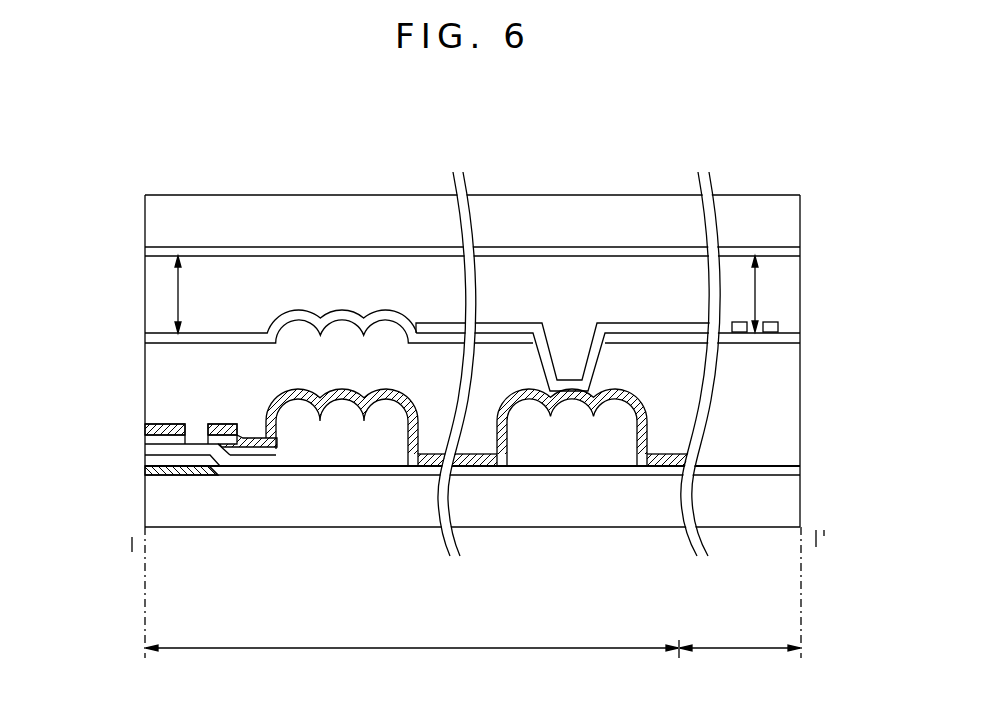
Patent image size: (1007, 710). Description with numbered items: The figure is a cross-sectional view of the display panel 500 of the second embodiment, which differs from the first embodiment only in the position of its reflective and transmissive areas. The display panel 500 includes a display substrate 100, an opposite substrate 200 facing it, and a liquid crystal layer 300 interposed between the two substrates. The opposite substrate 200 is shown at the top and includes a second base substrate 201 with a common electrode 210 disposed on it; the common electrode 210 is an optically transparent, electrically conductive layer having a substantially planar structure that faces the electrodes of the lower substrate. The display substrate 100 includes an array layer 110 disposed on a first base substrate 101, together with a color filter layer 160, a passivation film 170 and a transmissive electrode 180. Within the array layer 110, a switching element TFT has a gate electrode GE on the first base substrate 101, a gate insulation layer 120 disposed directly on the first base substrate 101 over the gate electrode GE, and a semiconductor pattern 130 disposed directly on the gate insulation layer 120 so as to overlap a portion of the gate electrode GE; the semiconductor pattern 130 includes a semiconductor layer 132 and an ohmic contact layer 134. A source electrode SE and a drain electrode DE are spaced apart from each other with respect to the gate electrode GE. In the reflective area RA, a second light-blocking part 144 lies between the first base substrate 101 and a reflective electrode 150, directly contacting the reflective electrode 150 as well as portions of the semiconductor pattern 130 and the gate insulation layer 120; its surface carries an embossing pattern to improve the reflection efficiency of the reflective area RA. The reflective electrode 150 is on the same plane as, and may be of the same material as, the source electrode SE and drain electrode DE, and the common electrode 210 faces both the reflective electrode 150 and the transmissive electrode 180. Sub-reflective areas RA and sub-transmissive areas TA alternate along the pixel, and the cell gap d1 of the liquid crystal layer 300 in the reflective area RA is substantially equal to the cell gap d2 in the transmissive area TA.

The display panel 500 is at (262, 150).
The opposite substrate 200 is at (128, 197).
The second base substrate 201 is at (204, 208).
The common electrode 210 is at (668, 247).
The liquid crystal layer 300 is at (128, 258).
The display substrate 100 is at (80, 338).
The array layer 110 is at (128, 440).
The first base substrate 101 is at (501, 530).
The gate insulation layer 120 is at (800, 466).
The semiconductor pattern 130 is at (330, 580).
The semiconductor layer 132 is at (262, 458).
The ohmic contact layer 134 is at (278, 460).
The second light-blocking part 144 is at (368, 437).
The reflective electrode 150 is at (415, 440).
The color filter layer 160 is at (667, 445).
The passivation film 170 is at (800, 343).
The transmissive electrode 180 is at (618, 323).
The source electrode SE is at (163, 437).
The gate electrode GE is at (207, 437).
The drain electrode DE is at (238, 436).
The switching element TFT is at (211, 522).
The reflective area RA is at (412, 665).
The transmissive area TA is at (740, 667).
The cell gap d1 is at (189, 294).
The cell gap d2 is at (766, 294).